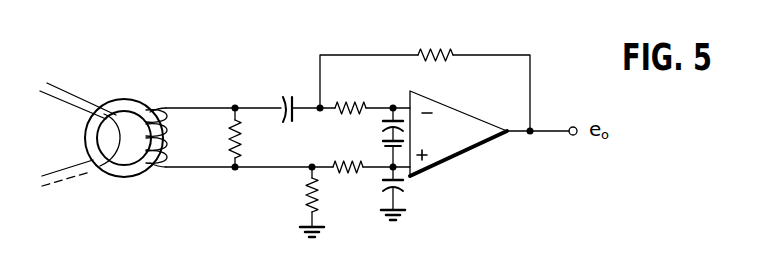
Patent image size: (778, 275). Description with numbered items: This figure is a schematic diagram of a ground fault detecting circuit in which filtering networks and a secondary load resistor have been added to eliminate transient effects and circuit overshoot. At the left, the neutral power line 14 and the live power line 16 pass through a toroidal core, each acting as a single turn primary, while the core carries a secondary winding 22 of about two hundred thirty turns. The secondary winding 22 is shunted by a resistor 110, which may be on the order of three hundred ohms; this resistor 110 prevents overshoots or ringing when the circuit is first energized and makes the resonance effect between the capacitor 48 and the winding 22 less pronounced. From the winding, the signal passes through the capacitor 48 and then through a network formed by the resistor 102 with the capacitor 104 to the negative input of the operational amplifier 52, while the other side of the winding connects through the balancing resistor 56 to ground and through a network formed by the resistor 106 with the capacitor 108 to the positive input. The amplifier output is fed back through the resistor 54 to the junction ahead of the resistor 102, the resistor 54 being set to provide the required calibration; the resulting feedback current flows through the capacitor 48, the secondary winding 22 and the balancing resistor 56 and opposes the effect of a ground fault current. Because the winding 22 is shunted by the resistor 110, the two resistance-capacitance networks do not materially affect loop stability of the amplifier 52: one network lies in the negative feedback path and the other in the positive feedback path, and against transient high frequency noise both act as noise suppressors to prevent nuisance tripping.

The neutral power line 14 is at (94, 95).
The live power line 16 is at (75, 109).
The secondary winding 22 is at (168, 107).
The capacitor 48 is at (281, 99).
The operational amplifier 52 is at (457, 137).
The resistor 54 is at (437, 46).
The balancing resistor 56 is at (307, 205).
The resistor 102 is at (354, 101).
The capacitor 104 is at (385, 120).
The resistor 106 is at (334, 163).
The capacitor 108 is at (398, 191).
The resistor 110 is at (229, 140).